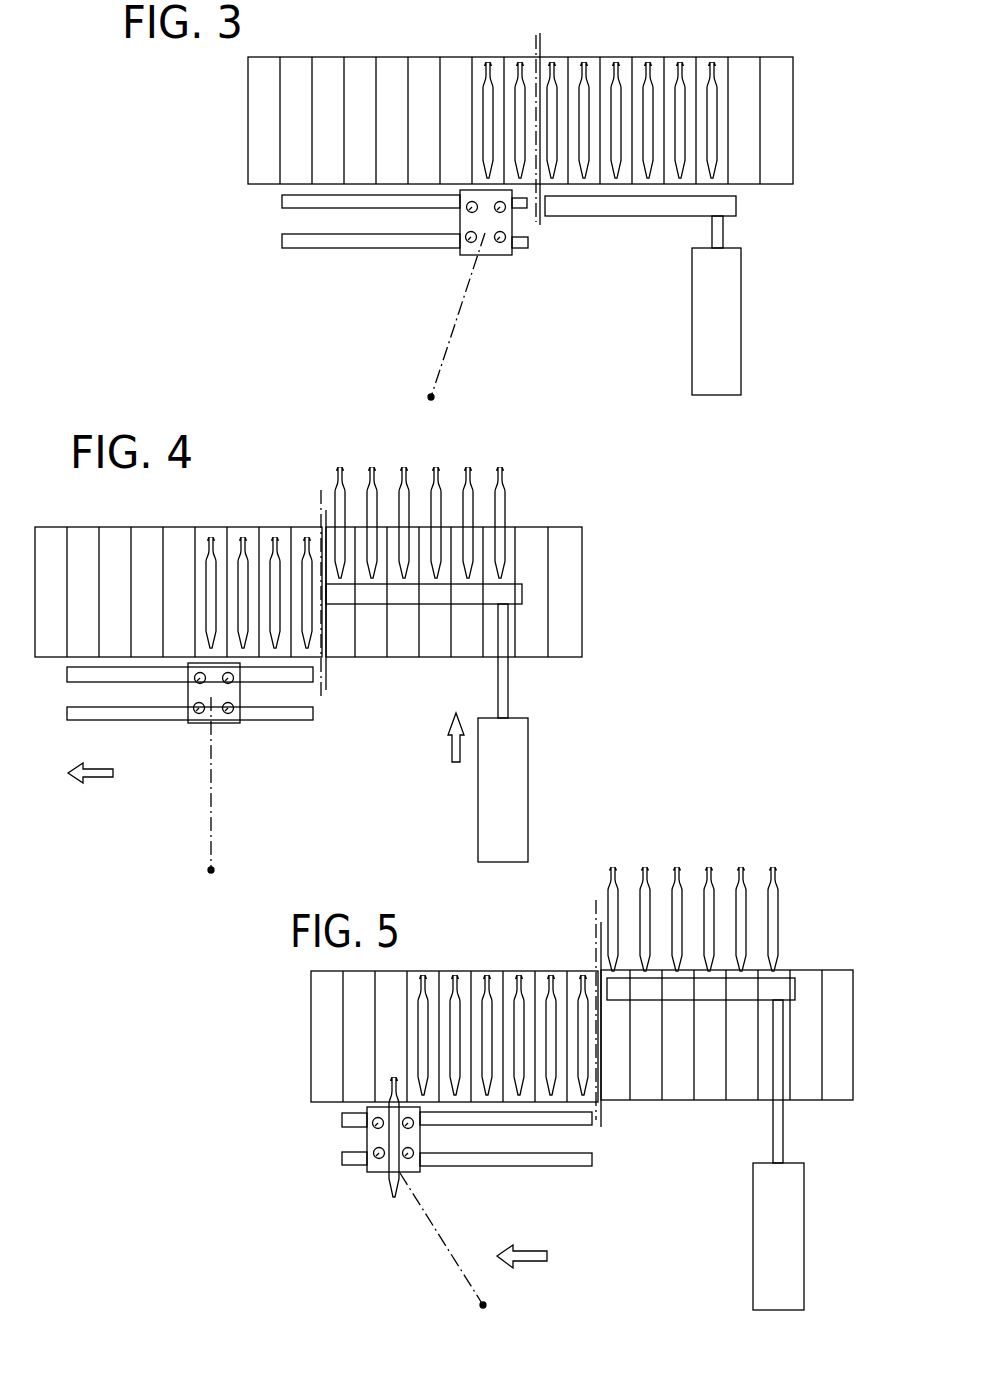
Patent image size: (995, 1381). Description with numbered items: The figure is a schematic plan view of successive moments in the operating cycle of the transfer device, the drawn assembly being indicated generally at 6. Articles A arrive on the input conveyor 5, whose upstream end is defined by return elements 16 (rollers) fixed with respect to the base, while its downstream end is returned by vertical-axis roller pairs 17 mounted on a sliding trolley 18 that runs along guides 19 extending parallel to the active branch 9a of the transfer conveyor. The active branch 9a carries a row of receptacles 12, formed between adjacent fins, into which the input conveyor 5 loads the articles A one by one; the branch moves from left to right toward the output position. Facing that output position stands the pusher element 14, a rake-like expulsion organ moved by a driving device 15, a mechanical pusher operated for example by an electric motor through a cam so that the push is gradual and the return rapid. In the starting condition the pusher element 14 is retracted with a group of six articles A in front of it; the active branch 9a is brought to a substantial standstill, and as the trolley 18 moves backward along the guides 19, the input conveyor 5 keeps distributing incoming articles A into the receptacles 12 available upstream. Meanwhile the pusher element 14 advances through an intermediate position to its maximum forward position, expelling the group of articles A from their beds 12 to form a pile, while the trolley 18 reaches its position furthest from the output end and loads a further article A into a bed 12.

In FIG. 3, the input conveyor 5 is at (450, 333).
In FIG. 4, the input conveyor 5 is at (211, 803).
In FIG. 5, the input conveyor 5 is at (448, 1250).
In FIG. 3, the conveyor 6 is at (226, 96).
In FIG. 4, the conveyor 6 is at (605, 530).
In FIG. 5, the conveyor 6 is at (290, 995).
In FIG. 3, the active branch 9a is at (260, 196).
In FIG. 4, the active branch 9a is at (50, 675).
In FIG. 5, the active branch 9a is at (308, 1120).
In FIG. 3, the receptacles 12 is at (458, 74).
In FIG. 4, the receptacles 12 is at (172, 548).
In FIG. 5, the receptacles 12 is at (385, 1012).
In FIG. 3, the pusher element 14 is at (592, 210).
In FIG. 4, the pusher element 14 is at (510, 594).
In FIG. 5, the pusher element 14 is at (786, 976).
In FIG. 3, the driving device 15 is at (730, 318).
In FIG. 4, the driving device 15 is at (513, 773).
In FIG. 5, the driving device 15 is at (763, 1203).
In FIG. 3, the return elements 16 is at (431, 397).
In FIG. 4, the return elements 16 is at (211, 870).
In FIG. 5, the return elements 16 is at (483, 1305).
In FIG. 3, the downstream return elements 17 is at (471, 213).
In FIG. 4, the downstream return elements 17 is at (200, 684).
In FIG. 5, the downstream return elements 17 is at (376, 1130).
In FIG. 3, the sliding trolley 18 is at (490, 255).
In FIG. 4, the sliding trolley 18 is at (222, 723).
In FIG. 5, the sliding trolley 18 is at (382, 1172).
In FIG. 3, the guides 19 is at (303, 202).
In FIG. 4, the guides 19 is at (127, 675).
In FIG. 5, the guides 19 is at (570, 1122).
In FIG. 3, the articles A is at (521, 72).
In FIG. 4, the articles A is at (268, 555).
In FIG. 5, the articles A is at (585, 995).